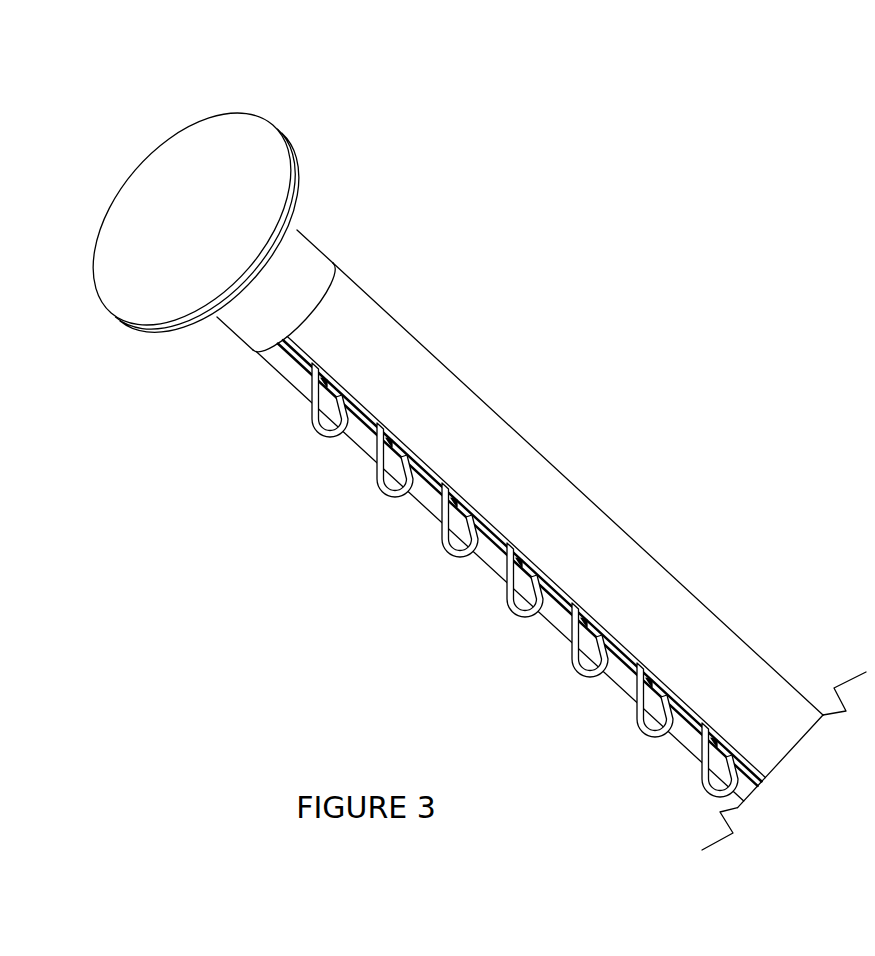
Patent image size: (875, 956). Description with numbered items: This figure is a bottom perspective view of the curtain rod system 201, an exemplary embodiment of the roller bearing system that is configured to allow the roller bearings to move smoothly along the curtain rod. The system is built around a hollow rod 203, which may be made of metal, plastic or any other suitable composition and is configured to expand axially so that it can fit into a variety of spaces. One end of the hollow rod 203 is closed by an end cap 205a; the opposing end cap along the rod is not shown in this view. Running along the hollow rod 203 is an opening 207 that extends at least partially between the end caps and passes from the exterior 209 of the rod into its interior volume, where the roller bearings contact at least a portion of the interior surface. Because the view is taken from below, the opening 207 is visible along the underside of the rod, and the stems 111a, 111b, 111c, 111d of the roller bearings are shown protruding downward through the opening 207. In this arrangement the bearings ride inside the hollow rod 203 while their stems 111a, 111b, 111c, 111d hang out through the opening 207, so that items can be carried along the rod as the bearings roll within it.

The curtain rod system 201 is at (460, 443).
The hollow rod 203 is at (356, 283).
The end cap 205a is at (277, 120).
The opening 207 is at (290, 370).
The exterior 209 is at (405, 378).
The stem 111a is at (323, 438).
The stem 111b is at (389, 498).
The stem 111c is at (455, 558).
The stem 111d is at (521, 618).